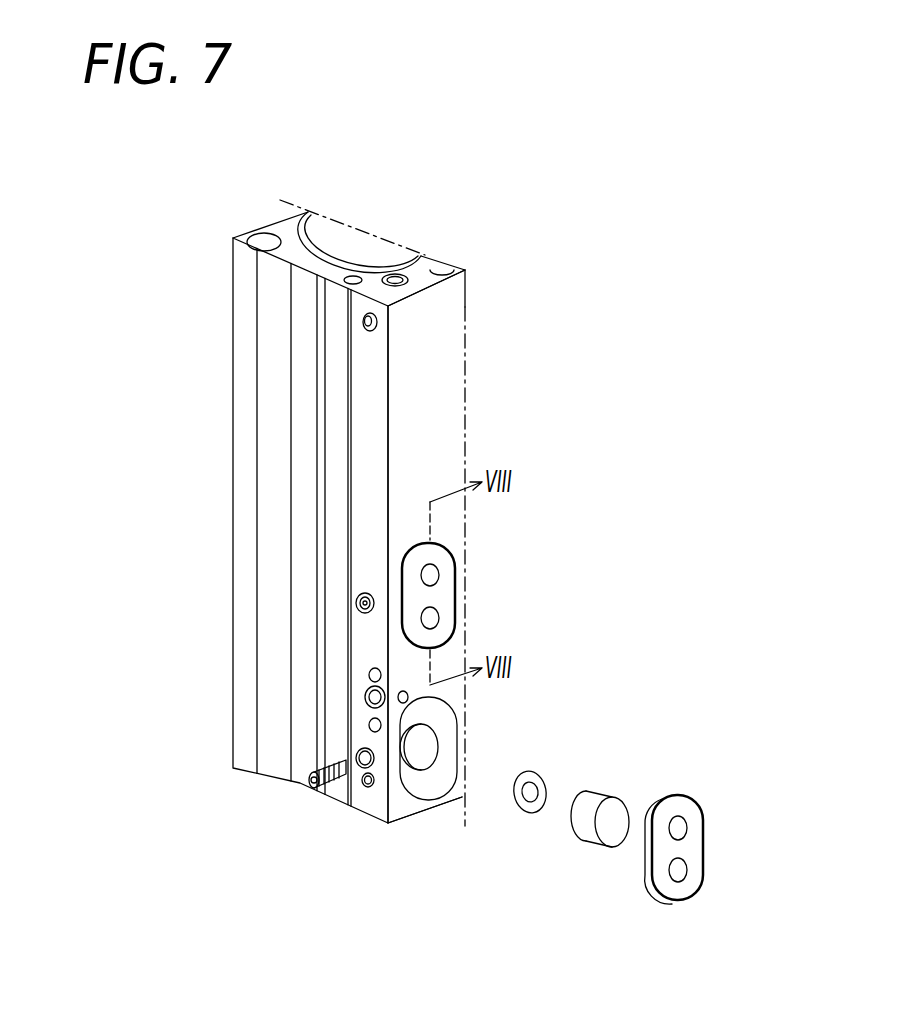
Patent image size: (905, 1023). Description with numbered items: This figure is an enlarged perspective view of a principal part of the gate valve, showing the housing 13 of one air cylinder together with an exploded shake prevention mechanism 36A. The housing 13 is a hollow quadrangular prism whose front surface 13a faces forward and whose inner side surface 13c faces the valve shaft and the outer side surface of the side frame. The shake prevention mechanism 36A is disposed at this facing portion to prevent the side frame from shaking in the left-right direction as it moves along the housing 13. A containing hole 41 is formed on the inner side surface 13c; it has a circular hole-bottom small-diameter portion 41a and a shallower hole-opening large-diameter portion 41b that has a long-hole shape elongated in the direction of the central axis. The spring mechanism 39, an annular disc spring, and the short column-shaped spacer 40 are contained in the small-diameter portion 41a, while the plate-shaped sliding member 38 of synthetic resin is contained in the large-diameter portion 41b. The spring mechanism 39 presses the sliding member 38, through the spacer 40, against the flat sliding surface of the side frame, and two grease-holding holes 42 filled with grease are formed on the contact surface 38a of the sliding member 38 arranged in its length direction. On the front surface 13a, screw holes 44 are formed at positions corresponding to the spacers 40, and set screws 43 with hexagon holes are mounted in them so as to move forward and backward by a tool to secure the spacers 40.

The housing 13 is at (420, 280).
The front surface 13a is at (247, 337).
The inner side surface 13c is at (433, 363).
The shake prevention mechanism 36A is at (466, 569).
The sliding member 38 is at (446, 594).
The contact surface 38a is at (688, 843).
The spring mechanism 39 is at (543, 778).
The spacer 40 is at (600, 797).
The containing hole 41 is at (386, 818).
The small-diameter portion 41a is at (417, 762).
The large-diameter portion 41b is at (427, 778).
The grease-holding hole 42 is at (427, 573).
The set screw 43 is at (358, 607).
The screw hole 44 is at (357, 758).